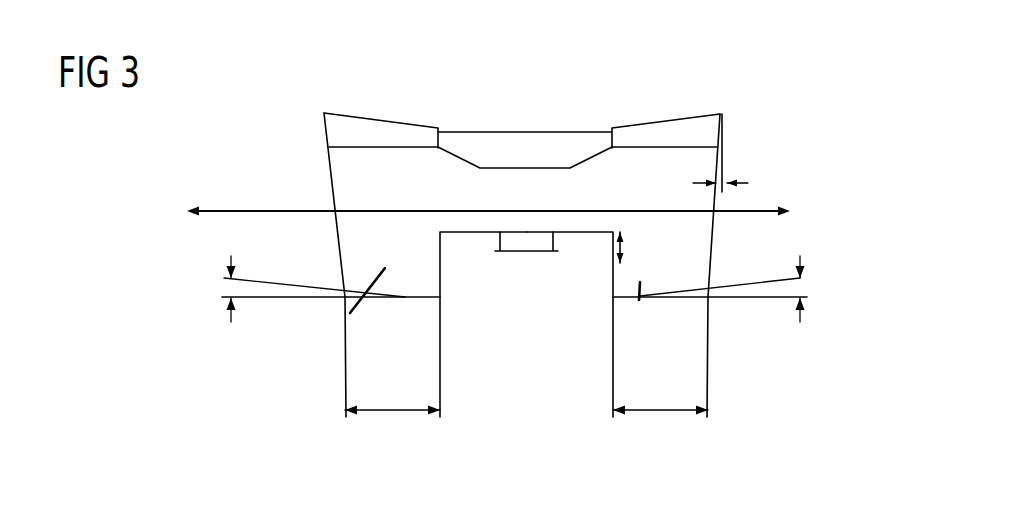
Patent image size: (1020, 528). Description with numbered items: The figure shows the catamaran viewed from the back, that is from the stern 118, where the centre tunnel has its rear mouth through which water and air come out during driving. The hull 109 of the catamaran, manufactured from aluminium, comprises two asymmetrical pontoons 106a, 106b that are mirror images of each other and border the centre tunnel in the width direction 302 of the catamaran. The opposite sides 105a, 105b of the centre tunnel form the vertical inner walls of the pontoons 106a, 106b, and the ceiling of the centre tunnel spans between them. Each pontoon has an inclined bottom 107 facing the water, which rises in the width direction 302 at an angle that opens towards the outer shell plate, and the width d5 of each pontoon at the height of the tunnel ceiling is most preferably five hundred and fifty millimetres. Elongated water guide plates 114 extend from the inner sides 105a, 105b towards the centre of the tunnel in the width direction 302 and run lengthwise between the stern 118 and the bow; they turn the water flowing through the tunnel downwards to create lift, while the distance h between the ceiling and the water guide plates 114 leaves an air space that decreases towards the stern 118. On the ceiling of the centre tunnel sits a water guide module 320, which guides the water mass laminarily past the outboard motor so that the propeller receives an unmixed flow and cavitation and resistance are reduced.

The hull 109 is at (282, 249).
The stern 118 is at (406, 179).
The side of the centre tunnel 105a is at (613, 247).
The side of the centre tunnel 105b is at (440, 247).
The water guide module 320 is at (517, 252).
The water guide plate 114 is at (453, 257).
The pontoon 106a is at (652, 302).
The pontoon 106b is at (362, 296).
The inclined bottom 107 is at (392, 293).
The width direction 302 is at (752, 212).
The width of the pontoon d5 is at (388, 412).
The distance between the ceiling of the centre tunnel and the water guide plates h is at (634, 244).